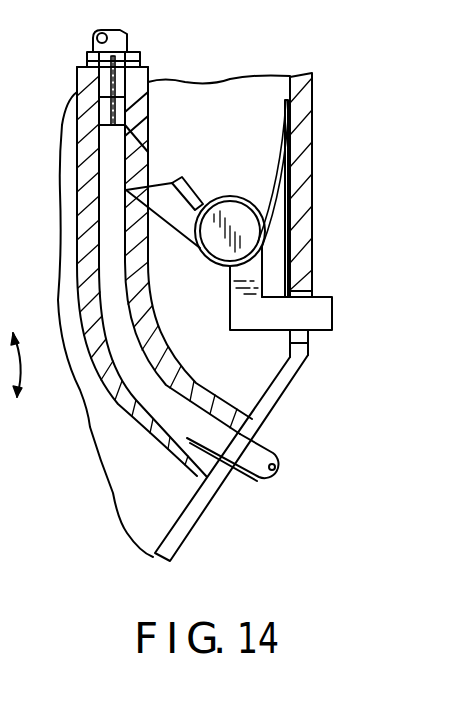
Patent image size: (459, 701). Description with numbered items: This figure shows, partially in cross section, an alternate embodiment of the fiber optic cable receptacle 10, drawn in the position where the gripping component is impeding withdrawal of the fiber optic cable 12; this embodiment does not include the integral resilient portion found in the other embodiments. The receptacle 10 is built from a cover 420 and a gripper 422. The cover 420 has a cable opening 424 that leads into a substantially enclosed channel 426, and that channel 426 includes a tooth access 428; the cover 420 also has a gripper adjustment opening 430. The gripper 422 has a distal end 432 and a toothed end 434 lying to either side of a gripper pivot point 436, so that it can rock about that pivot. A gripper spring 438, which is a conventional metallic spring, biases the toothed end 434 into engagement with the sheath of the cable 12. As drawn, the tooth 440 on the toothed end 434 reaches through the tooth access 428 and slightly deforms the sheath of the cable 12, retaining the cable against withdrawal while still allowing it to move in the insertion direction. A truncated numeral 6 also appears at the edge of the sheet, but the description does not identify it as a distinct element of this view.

The fiber optic cable receptacle 10 is at (336, 363).
The fiber optic cable 12 is at (268, 446).
The partial numeral 6 is at (6, 280).
The cover 420 is at (314, 185).
The gripper 422 is at (180, 173).
The cable opening 424 is at (236, 474).
The substantially enclosed channel 426 is at (135, 368).
The tooth access 428 is at (98, 172).
The gripper adjustment opening 430 is at (290, 343).
The distal end 432 is at (322, 316).
The toothed end 434 is at (150, 167).
The gripper pivot point 436 is at (257, 238).
The gripper spring 438 is at (314, 123).
The tooth 440 is at (99, 205).